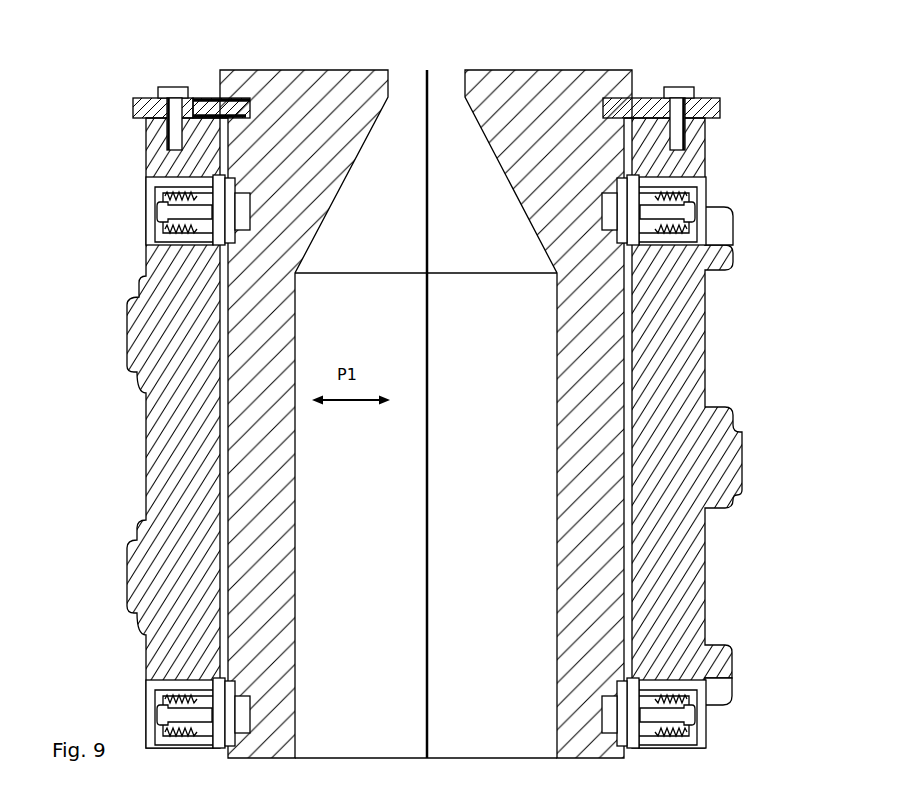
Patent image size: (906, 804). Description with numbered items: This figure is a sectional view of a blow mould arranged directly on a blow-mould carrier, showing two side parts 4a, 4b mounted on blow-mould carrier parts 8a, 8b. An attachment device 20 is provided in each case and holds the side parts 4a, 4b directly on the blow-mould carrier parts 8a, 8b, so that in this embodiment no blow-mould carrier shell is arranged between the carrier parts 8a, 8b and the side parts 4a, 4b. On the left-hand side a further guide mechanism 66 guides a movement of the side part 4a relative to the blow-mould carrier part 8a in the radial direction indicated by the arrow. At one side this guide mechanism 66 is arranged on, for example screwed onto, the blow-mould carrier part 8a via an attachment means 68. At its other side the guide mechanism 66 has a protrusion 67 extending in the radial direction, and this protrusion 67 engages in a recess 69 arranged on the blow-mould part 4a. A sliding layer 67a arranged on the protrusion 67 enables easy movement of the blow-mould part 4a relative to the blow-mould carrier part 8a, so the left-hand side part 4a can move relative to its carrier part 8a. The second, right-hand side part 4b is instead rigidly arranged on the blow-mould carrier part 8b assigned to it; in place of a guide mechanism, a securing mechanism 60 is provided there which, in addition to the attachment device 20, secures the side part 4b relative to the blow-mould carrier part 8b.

The side part 4a is at (257, 495).
The side part 4b is at (597, 348).
The blow-mould carrier part 8a is at (173, 597).
The blow-mould carrier part 8b is at (663, 598).
The attachment device 20 is at (128, 207).
The securing mechanism 60 is at (728, 105).
The guide mechanism 66 is at (128, 100).
The protrusion 67 is at (220, 108).
The sliding layer 67a is at (200, 97).
The attachment means 68 is at (168, 98).
The recess 69 is at (250, 110).